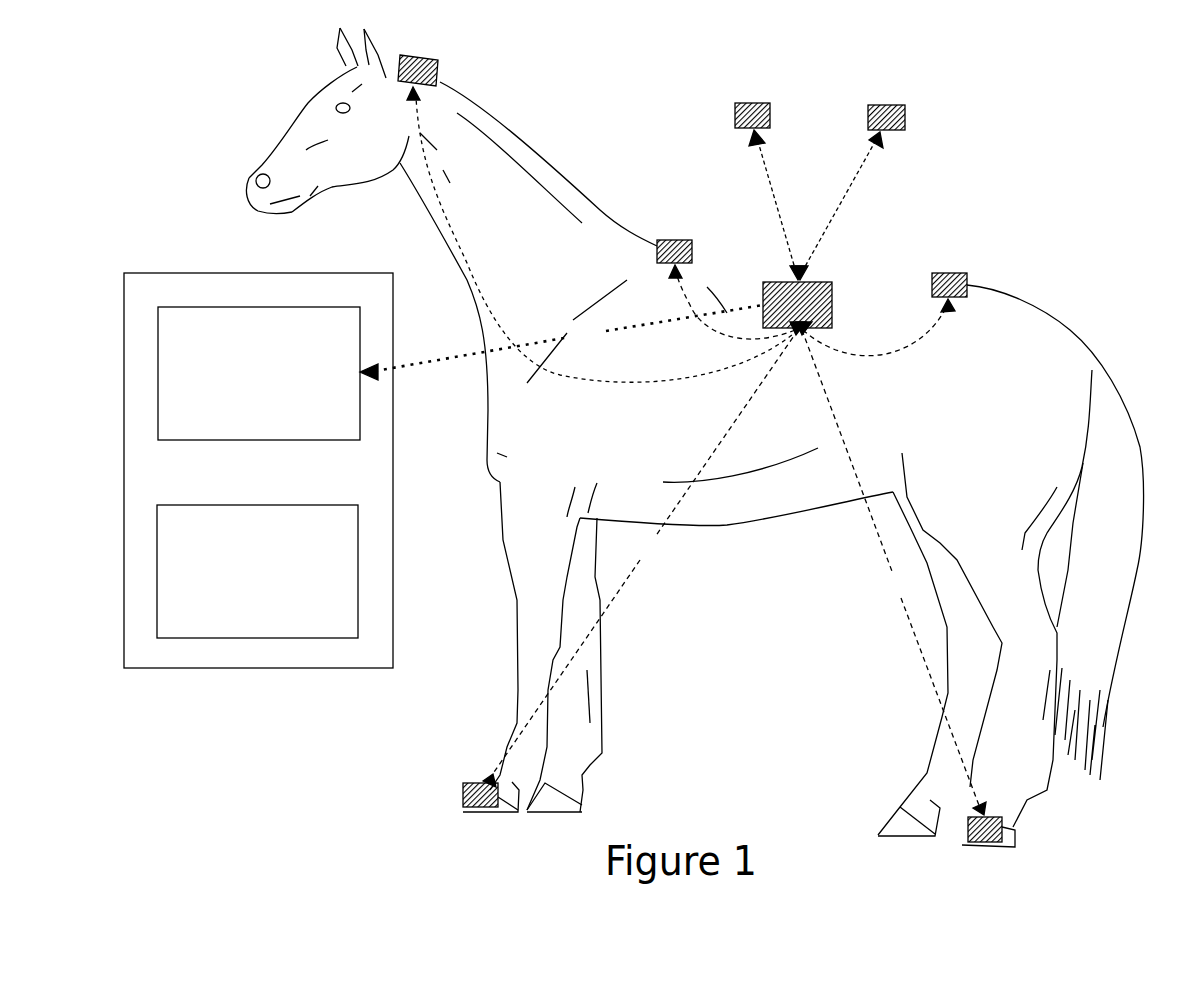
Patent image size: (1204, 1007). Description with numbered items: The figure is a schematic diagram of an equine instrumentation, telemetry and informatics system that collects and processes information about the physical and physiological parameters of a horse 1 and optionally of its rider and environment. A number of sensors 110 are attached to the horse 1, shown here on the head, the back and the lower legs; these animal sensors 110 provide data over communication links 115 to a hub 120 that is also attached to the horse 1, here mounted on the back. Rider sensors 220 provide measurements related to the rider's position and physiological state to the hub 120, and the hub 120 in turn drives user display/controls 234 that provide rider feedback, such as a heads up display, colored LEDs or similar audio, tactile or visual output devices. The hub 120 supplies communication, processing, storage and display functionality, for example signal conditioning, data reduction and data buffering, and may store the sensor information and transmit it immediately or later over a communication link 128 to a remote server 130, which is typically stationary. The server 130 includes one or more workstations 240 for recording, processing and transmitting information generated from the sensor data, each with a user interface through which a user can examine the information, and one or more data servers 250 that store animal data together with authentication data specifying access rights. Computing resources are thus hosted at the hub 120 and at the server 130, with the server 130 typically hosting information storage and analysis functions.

The horse (animal) 1 is at (694, 437).
The sensors 110 is at (731, 455).
The communication links 115 is at (735, 565).
The hub 120 is at (832, 287).
The communication link to server 128 is at (561, 342).
The server 130 is at (258, 470).
The rider sensors 220 is at (923, 184).
The user display/controls 234 is at (682, 183).
The workstation 240 is at (259, 373).
The data server 250 is at (257, 571).